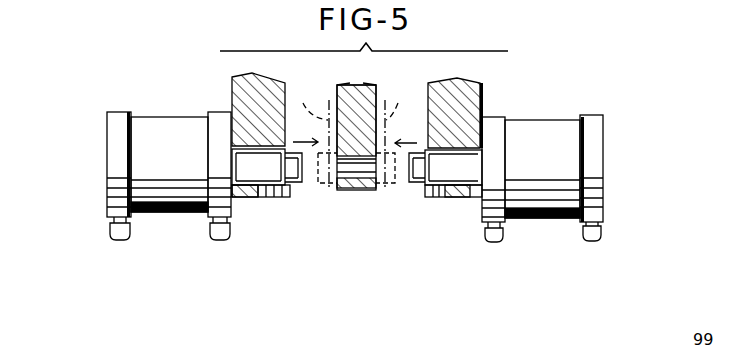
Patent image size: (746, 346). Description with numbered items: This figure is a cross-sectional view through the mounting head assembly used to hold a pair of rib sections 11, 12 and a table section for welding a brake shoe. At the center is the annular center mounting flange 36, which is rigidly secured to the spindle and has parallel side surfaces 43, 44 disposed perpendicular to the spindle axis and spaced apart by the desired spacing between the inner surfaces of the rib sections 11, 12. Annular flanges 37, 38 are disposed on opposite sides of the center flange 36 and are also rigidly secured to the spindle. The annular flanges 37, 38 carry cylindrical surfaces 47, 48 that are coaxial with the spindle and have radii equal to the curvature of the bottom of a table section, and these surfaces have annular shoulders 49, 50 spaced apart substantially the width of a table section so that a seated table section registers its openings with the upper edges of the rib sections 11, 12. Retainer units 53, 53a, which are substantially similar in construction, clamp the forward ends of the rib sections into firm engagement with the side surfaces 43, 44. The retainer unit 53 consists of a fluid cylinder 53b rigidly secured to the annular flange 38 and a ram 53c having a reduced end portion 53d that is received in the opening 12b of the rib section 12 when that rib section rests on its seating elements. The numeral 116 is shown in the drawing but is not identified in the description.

The rib section 11 is at (313, 135).
The rib section 12 is at (403, 138).
The opening 12b is at (395, 185).
The center mounting flange 36 is at (360, 192).
The annular flange 37 is at (232, 84).
The annular flange 38 is at (483, 100).
The side surface 43 is at (337, 88).
The side surface 44 is at (377, 92).
The cylindrical surface 47 is at (277, 200).
The cylindrical surface 48 is at (440, 200).
The annular shoulder 49 is at (262, 203).
The annular shoulder 50 is at (452, 196).
The retainer unit 53 is at (576, 197).
The retainer unit 53a is at (100, 152).
The fluid cylinder 53b is at (548, 222).
The ram 53c is at (477, 168).
The reduced end portion 53d is at (414, 192).
The shaft end cap 116 is at (283, 196).